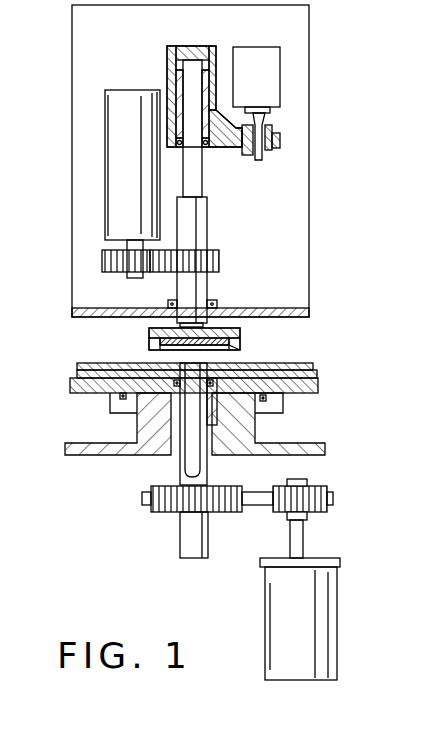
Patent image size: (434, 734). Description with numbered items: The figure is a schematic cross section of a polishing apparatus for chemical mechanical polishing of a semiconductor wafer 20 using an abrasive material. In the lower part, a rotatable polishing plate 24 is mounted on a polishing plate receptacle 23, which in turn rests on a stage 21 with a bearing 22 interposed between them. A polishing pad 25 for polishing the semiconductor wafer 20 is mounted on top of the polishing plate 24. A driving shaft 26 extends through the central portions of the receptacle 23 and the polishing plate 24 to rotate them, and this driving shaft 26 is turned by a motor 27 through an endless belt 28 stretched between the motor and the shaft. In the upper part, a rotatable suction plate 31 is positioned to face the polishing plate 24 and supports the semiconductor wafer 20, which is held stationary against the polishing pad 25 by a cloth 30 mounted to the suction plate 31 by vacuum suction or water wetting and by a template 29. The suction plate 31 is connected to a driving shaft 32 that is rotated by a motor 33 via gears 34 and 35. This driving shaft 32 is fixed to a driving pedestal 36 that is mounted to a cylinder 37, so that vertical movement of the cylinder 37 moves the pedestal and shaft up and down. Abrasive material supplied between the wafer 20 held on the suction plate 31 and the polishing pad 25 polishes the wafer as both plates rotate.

The semiconductor wafer 20 is at (163, 357).
The stage 21 is at (143, 423).
The bearing 22 is at (267, 401).
The polishing plate receptacle 23 is at (320, 390).
The polishing plate 24 is at (318, 375).
The polishing pad 25 is at (314, 366).
The driving shaft 26 is at (185, 467).
The motor 27 is at (322, 618).
The endless belt 28 is at (258, 498).
The template 29 is at (245, 347).
The cloth 30 is at (242, 333).
The suction plate 31 is at (150, 337).
The driving shaft 32 is at (208, 192).
The motor 33 is at (110, 107).
The gear 34 is at (101, 262).
The gear 35 is at (221, 262).
The driving pedestal 36 is at (206, 47).
The cylinder 37 is at (263, 55).